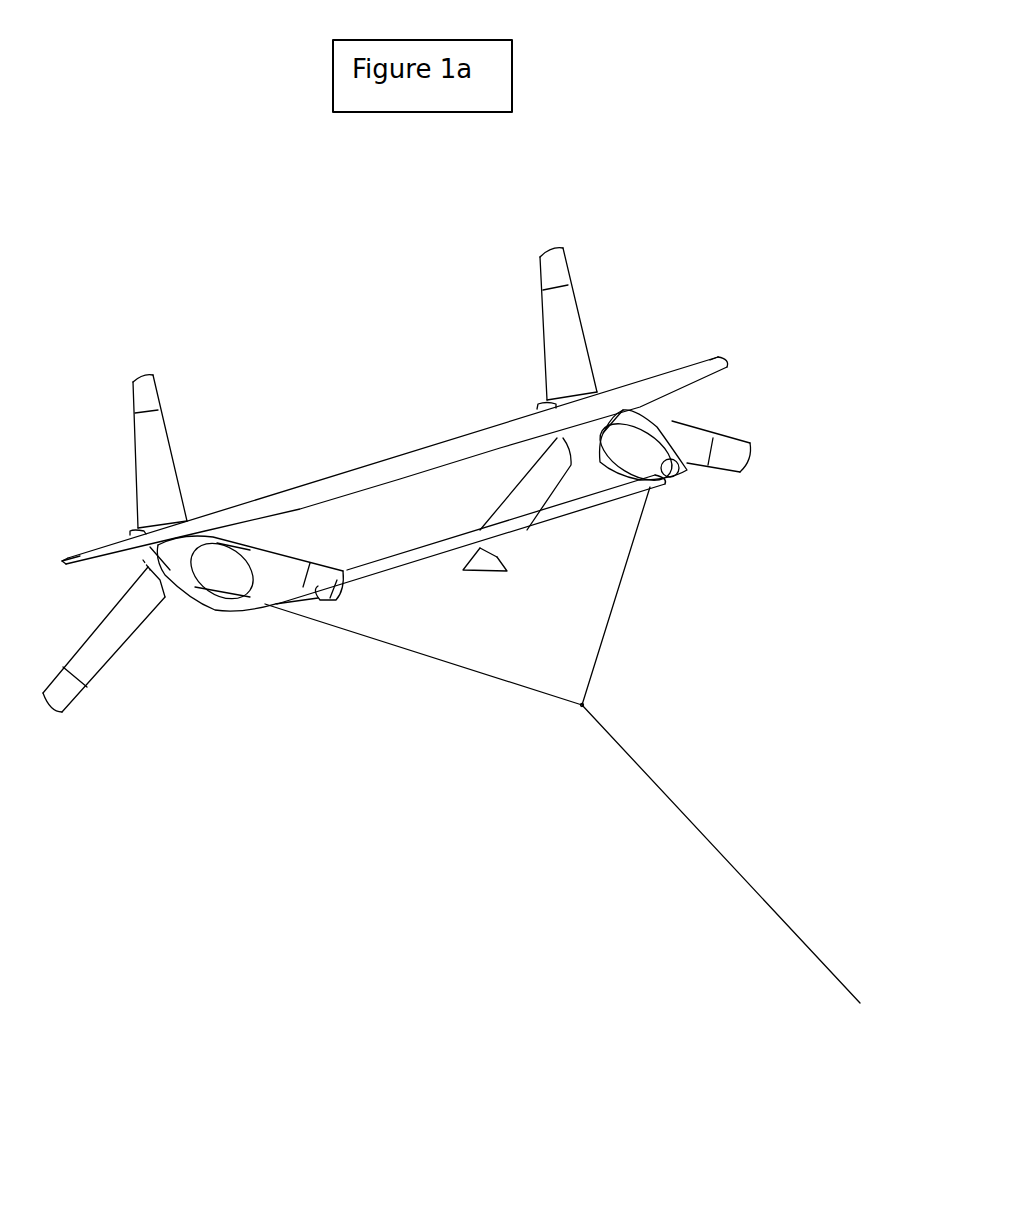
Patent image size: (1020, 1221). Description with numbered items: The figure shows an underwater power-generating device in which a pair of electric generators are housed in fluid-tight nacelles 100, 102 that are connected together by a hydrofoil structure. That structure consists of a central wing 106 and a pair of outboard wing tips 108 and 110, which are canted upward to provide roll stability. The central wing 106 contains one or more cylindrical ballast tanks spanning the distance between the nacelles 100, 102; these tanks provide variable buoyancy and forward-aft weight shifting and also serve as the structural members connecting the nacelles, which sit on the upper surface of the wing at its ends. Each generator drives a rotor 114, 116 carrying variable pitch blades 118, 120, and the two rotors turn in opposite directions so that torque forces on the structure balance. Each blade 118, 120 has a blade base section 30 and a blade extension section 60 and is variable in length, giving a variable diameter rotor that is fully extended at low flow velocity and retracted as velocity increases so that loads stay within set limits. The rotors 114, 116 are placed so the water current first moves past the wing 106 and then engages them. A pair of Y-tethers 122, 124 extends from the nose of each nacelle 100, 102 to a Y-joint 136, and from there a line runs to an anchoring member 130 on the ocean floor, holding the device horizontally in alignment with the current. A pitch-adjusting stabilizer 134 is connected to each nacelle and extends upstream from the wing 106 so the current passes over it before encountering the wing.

The blade base section 30 is at (586, 332).
The blade extension section 60 is at (546, 270).
The nacelle 100 is at (200, 545).
The nacelle 102 is at (612, 420).
The central wing 106 is at (463, 443).
The wing tip 108 is at (88, 552).
The wing tip 110 is at (716, 368).
The rotor 114 is at (130, 530).
The rotor 116 is at (545, 401).
The variable pitch blade 118 is at (98, 680).
The variable pitch blade 120 is at (710, 467).
The Y-tether 122 is at (440, 672).
The Y-tether 124 is at (622, 607).
The anchoring member 130 is at (850, 1007).
The pitch-adjusting stabilizer 134 is at (560, 514).
The Y-joint 136 is at (580, 708).